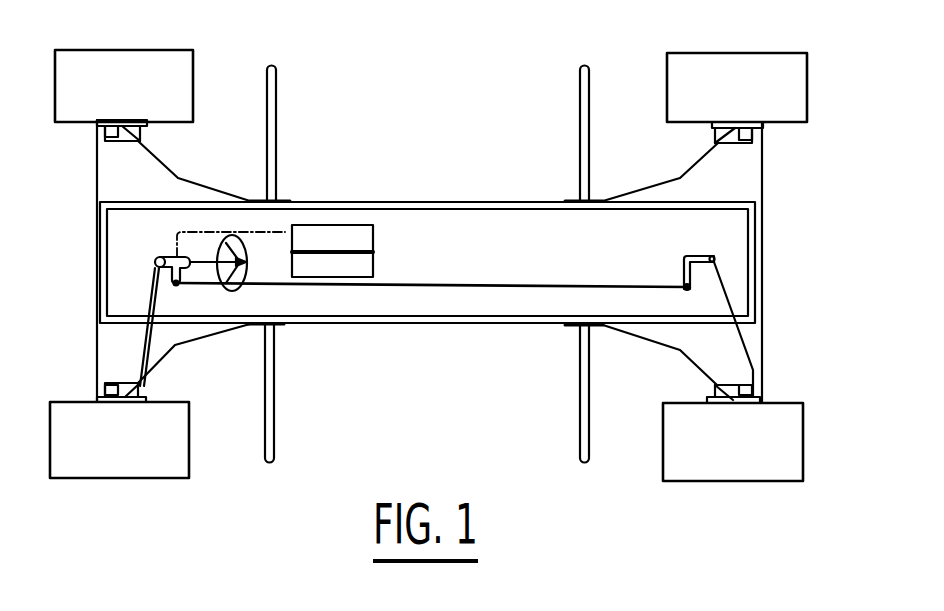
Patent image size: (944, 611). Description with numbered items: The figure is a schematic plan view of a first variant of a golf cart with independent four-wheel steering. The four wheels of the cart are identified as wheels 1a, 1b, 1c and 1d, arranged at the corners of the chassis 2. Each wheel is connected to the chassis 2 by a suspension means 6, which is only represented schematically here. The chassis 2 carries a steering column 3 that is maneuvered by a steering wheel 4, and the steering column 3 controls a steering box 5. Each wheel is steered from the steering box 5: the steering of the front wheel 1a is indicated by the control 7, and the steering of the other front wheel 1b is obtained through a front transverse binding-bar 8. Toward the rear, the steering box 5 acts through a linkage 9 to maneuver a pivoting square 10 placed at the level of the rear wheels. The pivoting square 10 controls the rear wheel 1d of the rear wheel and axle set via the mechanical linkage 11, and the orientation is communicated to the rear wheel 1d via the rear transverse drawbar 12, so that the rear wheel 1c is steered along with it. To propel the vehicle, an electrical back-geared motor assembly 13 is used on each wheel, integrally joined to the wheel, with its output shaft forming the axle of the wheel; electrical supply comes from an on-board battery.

The front wheel 1a is at (89, 460).
The front wheel 1b is at (93, 68).
The rear wheel 1c is at (703, 70).
The rear wheel 1d is at (703, 466).
The chassis 2 is at (426, 203).
The steering column 3 is at (206, 262).
The steering wheel 4 is at (259, 264).
The steering box 5 is at (157, 258).
The suspension means 6 is at (170, 180).
The control 7 is at (146, 344).
The front transverse binding-bar 8 is at (97, 192).
The linkage 9 is at (410, 287).
The pivoting square 10 is at (684, 273).
The mechanical linkage 11 is at (750, 339).
The rear transverse drawbar 12 is at (762, 197).
The electrical back-geared motor assembly 13 is at (112, 139).